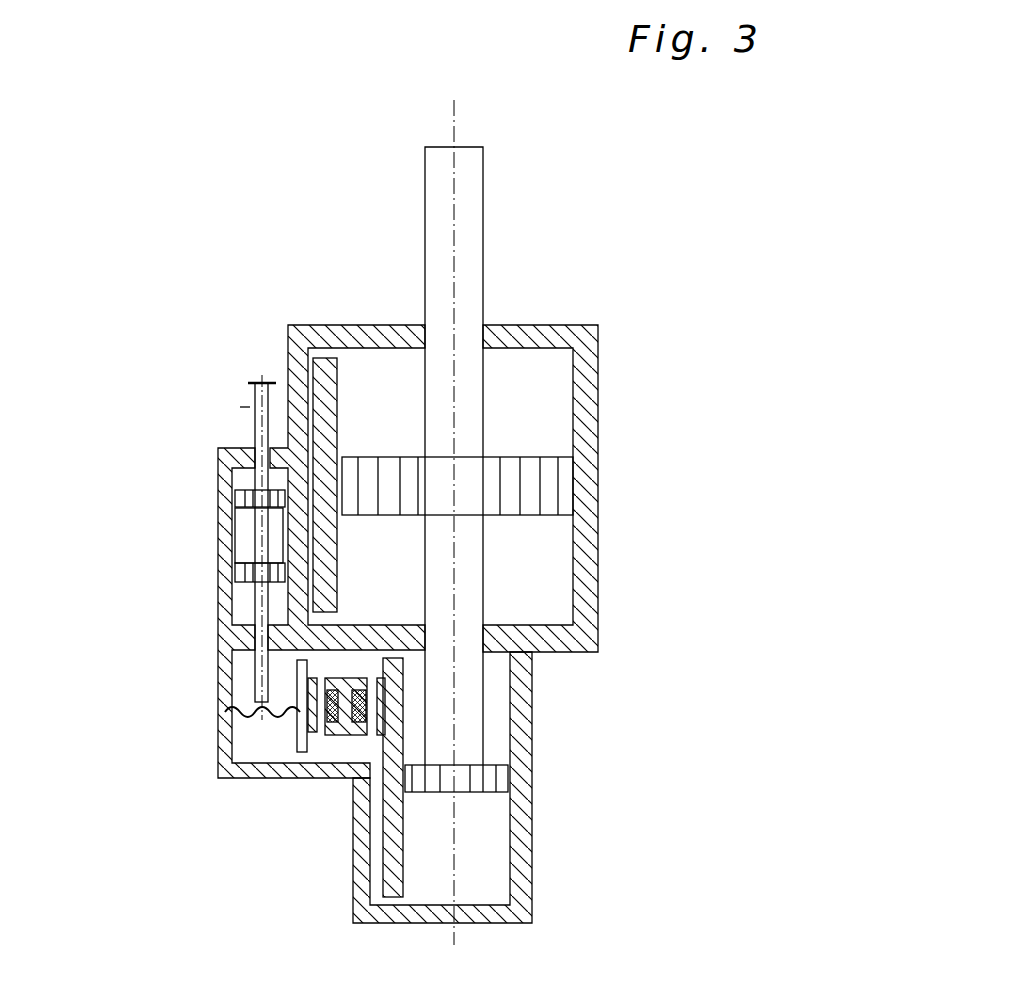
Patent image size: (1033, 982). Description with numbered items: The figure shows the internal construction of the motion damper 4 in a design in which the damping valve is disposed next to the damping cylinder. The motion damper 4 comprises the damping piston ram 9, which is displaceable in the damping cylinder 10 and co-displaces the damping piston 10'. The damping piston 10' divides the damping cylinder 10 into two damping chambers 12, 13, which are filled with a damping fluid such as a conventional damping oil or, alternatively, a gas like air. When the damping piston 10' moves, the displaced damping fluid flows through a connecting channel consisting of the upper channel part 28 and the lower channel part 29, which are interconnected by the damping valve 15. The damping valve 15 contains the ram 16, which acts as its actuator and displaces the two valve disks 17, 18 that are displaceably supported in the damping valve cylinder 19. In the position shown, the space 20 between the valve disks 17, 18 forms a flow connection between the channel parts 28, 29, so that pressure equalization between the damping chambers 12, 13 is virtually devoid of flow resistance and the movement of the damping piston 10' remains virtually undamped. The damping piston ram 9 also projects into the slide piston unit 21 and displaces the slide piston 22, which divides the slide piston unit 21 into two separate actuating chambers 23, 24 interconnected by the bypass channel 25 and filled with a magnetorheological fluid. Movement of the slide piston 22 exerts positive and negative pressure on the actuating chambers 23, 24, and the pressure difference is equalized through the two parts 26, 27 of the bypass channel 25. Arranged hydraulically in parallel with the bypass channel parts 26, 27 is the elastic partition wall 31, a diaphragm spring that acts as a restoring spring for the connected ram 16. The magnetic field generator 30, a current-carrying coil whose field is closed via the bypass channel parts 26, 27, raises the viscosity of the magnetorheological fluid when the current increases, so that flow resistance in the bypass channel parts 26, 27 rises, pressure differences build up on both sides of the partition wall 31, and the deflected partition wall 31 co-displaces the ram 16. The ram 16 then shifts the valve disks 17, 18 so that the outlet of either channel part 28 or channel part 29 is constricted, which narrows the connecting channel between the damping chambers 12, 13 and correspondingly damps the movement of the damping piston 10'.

The motion damper 4 is at (648, 290).
The damping piston ram 9 is at (470, 195).
The damping cylinder 10 is at (509, 474).
The damping piston 10' is at (537, 483).
The damping chamber 12 is at (557, 413).
The damping chamber 13 is at (558, 565).
The damping valve 15 is at (135, 533).
The ram 16 is at (265, 660).
The valve disk 17 is at (218, 460).
The valve disk 18 is at (237, 568).
The damping valve cylinder 19 is at (223, 522).
The space 20 is at (238, 545).
The slide piston unit 21 is at (583, 742).
The slide piston 22 is at (508, 785).
The actuating chamber 23 is at (503, 712).
The actuating chamber 24 is at (495, 850).
The bypass channel 25 is at (352, 863).
The bypass channel part 26 is at (305, 750).
The bypass channel part 27 is at (350, 738).
The upper channel part 28 is at (300, 352).
The lower channel part 29 is at (220, 605).
The magnetic field generator 30 is at (318, 740).
The elastic partition wall 31 is at (230, 735).